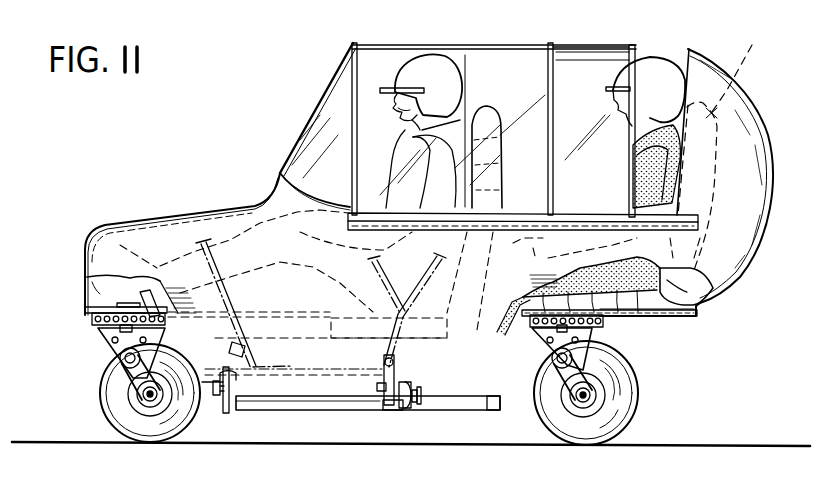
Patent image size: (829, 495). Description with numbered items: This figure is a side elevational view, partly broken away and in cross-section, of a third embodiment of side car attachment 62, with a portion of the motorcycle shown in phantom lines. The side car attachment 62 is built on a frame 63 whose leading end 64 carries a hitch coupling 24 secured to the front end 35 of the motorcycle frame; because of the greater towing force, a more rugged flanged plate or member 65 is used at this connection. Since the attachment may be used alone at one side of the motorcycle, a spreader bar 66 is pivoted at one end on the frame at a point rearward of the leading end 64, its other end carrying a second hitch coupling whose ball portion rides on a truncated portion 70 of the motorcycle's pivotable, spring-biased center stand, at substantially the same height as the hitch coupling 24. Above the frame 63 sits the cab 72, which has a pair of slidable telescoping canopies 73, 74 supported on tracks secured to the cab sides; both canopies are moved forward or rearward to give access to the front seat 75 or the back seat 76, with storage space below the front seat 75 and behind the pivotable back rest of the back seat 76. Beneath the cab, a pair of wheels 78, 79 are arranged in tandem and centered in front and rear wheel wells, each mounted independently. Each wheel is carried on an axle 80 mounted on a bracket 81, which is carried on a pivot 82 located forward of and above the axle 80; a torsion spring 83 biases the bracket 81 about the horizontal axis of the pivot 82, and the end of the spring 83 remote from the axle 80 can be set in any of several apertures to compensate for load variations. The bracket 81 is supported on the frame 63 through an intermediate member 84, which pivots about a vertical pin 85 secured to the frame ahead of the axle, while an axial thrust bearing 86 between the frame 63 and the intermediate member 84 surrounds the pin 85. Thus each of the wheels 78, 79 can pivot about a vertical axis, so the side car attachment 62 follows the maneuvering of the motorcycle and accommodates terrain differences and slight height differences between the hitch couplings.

The side car attachment 62 is at (203, 203).
The cab 72 is at (270, 183).
The telescoping canopy 73 is at (395, 60).
The telescoping canopy 74 is at (597, 67).
The front seat 75 is at (483, 116).
The back seat 76 is at (751, 47).
The axial thrust bearing 86 is at (102, 300).
The intermediate member 84 is at (92, 322).
The vertical pin 85 is at (100, 331).
The pivot 82 is at (118, 362).
The torsion spring 83 is at (128, 381).
The axle 80 is at (142, 395).
The front wheel 78 is at (115, 416).
The rear wheel 79 is at (582, 424).
The bracket 81 is at (141, 404).
The hitch coupling 24 is at (222, 406).
The leading end 64 is at (244, 408).
The frame 63 is at (341, 404).
The truncated portion of center stand 70 is at (388, 372).
The spreader bar 66 is at (407, 410).
The front end of motorcycle frame 35 is at (240, 326).
The flanged plate 65 is at (252, 352).